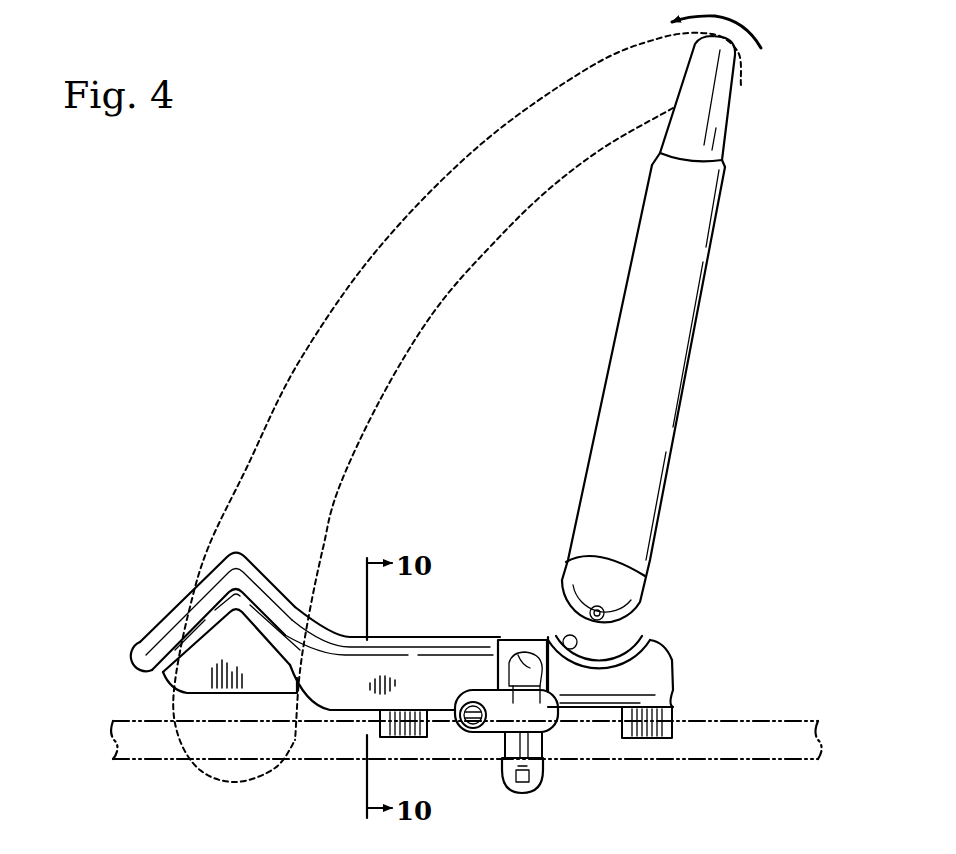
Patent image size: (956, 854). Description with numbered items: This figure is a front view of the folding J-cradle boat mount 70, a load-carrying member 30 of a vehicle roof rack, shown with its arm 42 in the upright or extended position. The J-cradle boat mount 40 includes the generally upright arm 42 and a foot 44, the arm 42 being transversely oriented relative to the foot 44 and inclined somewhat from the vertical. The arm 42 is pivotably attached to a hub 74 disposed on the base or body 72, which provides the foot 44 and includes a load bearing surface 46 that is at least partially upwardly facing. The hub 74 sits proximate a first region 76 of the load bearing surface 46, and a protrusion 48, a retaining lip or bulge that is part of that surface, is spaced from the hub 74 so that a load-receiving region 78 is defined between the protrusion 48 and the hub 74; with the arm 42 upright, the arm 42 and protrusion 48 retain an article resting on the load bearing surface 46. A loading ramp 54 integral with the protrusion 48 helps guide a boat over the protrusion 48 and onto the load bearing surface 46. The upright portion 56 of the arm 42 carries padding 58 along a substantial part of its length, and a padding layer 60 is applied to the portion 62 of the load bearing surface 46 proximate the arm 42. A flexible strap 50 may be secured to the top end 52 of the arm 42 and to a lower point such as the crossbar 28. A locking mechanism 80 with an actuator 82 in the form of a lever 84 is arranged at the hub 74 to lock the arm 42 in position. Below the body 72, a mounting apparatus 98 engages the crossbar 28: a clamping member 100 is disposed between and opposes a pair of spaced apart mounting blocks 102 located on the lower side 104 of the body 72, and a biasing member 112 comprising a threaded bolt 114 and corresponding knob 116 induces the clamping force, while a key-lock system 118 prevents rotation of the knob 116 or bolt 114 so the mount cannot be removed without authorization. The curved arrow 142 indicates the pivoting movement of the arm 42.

The crossbar 28 is at (742, 760).
The load-carrying member 30 is at (222, 228).
The J-cradle boat mount 40 is at (280, 248).
The arm 42 is at (669, 387).
The foot 44 is at (340, 577).
The load bearing surface 46 is at (402, 630).
The protrusion 48 is at (228, 599).
The flexible strap 50 is at (433, 317).
The top end 52 is at (740, 93).
The loading ramp 54 is at (147, 622).
The upright portion 56 is at (686, 316).
The padding 58 is at (667, 404).
The padding layer 60 is at (180, 607).
The portion of the load bearing surface 62 is at (450, 632).
The folding J-cradle boat mount 70 is at (330, 262).
The body 72 is at (265, 602).
The hub 74 is at (648, 637).
The first region 76 is at (473, 632).
The load-receiving region 78 is at (445, 553).
The locking mechanism 80 is at (647, 620).
The actuator 82 is at (552, 600).
The lever 84 is at (545, 612).
The mounting apparatus 98 is at (513, 724).
The clamping member 100 is at (523, 790).
The mounting blocks 102 is at (410, 745).
The lower side 104 is at (325, 772).
The biasing member 112 is at (495, 745).
The threaded bolt 114 is at (530, 743).
The knob 116 is at (522, 660).
The key-lock system 118 is at (476, 724).
The rotation direction 142 is at (752, 60).